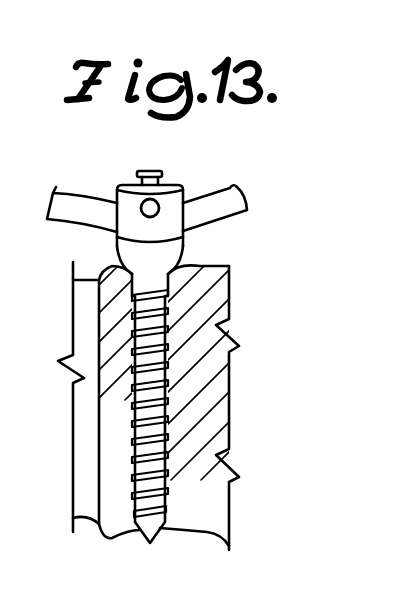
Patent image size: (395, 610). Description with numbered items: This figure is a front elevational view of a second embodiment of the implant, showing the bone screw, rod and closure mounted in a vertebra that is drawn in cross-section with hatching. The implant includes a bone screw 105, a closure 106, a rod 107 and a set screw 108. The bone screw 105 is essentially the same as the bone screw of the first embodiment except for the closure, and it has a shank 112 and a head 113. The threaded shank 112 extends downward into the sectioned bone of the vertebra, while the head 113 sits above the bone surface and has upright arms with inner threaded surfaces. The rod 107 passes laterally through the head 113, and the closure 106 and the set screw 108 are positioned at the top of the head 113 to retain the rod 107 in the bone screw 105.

The bone screw 105 is at (203, 364).
The closure 106 is at (120, 186).
The rod 107 is at (233, 186).
The set screw 108 is at (155, 170).
The shank 112 is at (165, 377).
The head 113 is at (195, 247).